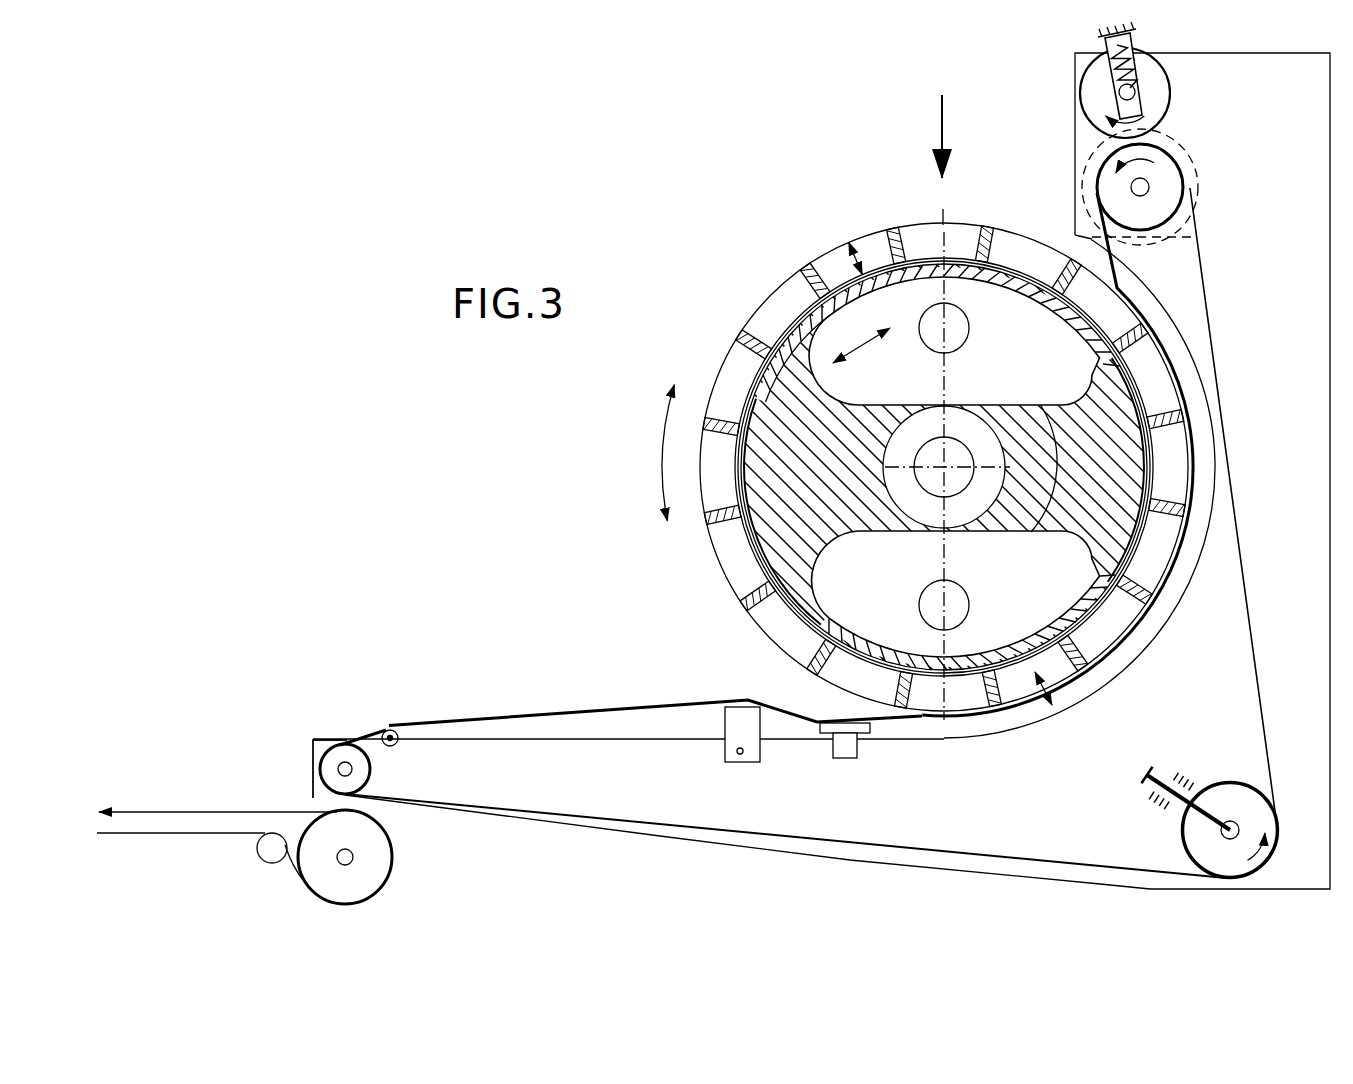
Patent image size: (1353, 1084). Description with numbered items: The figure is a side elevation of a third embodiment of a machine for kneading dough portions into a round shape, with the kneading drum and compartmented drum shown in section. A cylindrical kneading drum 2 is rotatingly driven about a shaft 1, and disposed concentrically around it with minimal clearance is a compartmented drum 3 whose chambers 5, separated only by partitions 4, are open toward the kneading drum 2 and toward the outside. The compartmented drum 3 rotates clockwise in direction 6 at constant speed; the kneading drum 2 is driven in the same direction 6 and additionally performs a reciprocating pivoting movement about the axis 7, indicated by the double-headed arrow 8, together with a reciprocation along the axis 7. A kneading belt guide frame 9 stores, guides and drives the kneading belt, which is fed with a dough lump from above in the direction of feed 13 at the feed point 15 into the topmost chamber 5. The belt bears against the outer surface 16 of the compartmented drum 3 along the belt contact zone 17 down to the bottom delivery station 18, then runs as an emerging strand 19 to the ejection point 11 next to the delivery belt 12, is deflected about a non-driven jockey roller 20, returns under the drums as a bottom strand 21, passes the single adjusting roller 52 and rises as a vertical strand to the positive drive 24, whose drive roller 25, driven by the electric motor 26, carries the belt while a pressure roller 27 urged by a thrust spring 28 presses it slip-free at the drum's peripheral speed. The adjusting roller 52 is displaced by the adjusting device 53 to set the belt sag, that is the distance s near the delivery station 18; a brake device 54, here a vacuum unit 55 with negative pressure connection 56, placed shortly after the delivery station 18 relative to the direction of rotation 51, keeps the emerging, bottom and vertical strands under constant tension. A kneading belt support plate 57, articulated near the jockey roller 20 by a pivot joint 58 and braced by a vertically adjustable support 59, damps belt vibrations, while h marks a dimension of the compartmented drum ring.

The shaft 1 is at (935, 455).
The kneading drum 2 is at (1008, 277).
The compartmented drum 3 is at (793, 272).
The partitions 4 is at (747, 333).
The chambers 5 is at (778, 627).
The direction of rotation 6 is at (662, 452).
The axis 7 is at (1045, 420).
The double-headed arrow 8 is at (862, 346).
The kneading belt guide frame 9 is at (1038, 806).
The ejection point 11 is at (300, 770).
The delivery belt 12 is at (165, 810).
The direction of feed 13 is at (941, 115).
The feed point 15 is at (938, 218).
The outer surface 16 is at (716, 565).
The belt contact zone 17 is at (955, 574).
The delivery station 18 is at (948, 719).
The emerging strand 19 is at (600, 702).
The jockey roller 20 is at (360, 768).
The bottom strand 21 is at (663, 826).
The positive drive 24 is at (1172, 130).
The drive roller 25 is at (1166, 168).
The electric motor 26 is at (1200, 197).
The pressure roller 27 is at (1163, 97).
The thrust spring 28 is at (1130, 70).
The direction of rotation 51 is at (617, 803).
The adjusting roller 52 is at (1227, 783).
The adjusting device 53 is at (1173, 768).
The brake device 54 is at (825, 747).
The vacuum unit 55 is at (862, 734).
The negative pressure connection 56 is at (843, 759).
The kneading belt support plate 57 is at (502, 722).
The pivot joint 58 is at (397, 741).
The vertically adjustable support 59 is at (740, 728).
The ring height h is at (865, 258).
The distance s is at (1052, 707).